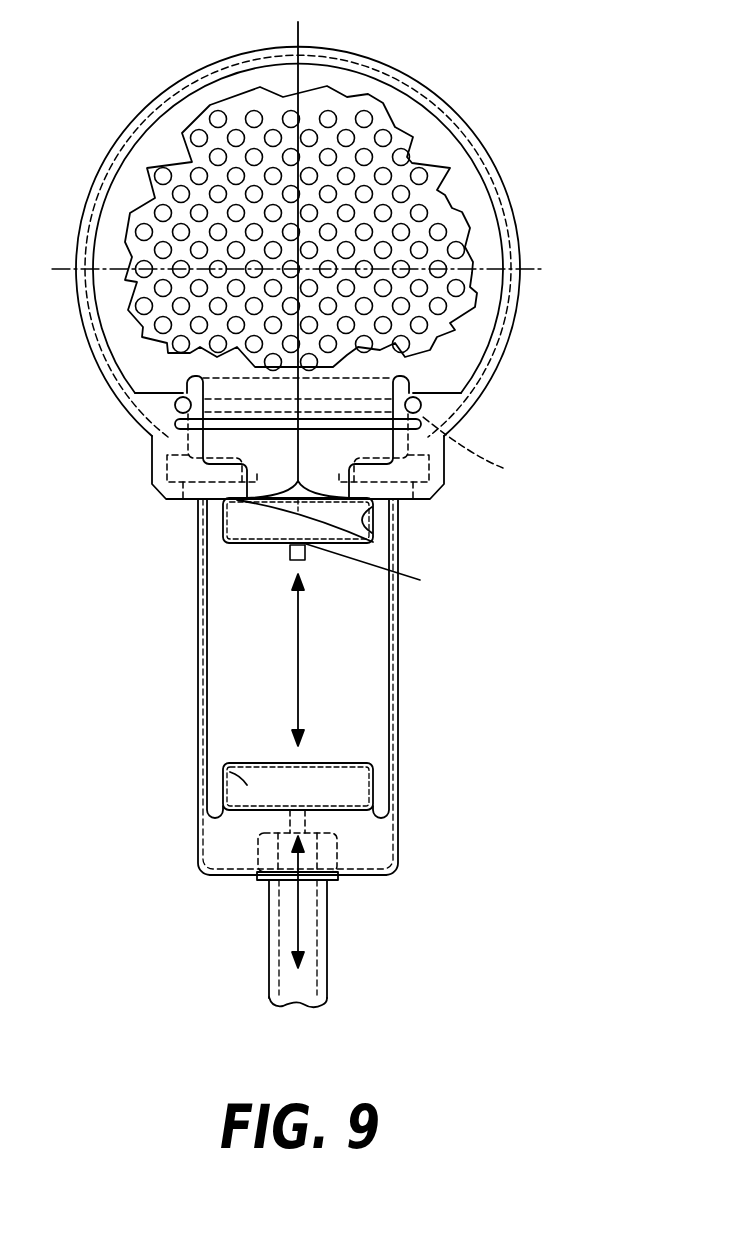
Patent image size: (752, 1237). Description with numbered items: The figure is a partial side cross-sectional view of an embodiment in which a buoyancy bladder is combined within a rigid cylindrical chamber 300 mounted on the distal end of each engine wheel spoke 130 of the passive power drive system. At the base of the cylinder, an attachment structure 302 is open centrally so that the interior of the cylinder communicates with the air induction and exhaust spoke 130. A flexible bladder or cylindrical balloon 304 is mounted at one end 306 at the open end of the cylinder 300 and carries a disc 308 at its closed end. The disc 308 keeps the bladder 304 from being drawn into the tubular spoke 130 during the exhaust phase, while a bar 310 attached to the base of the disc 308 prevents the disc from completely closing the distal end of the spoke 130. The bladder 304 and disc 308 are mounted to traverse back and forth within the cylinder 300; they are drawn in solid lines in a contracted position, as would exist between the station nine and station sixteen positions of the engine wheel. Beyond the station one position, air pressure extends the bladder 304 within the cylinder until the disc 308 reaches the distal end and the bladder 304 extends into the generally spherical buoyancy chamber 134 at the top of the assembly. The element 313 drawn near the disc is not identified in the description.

The spherical buoyancy chamber 134 is at (472, 127).
The flexible bladder 304 is at (330, 92).
The bladder end 306 is at (343, 440).
The disc 308 is at (257, 532).
The bar 310 is at (308, 555).
The seal member 313 is at (420, 580).
The attachment structure 302 is at (335, 823).
The rigid cylindrical chamber 300 is at (397, 867).
The engine wheel spoke 130 is at (305, 985).